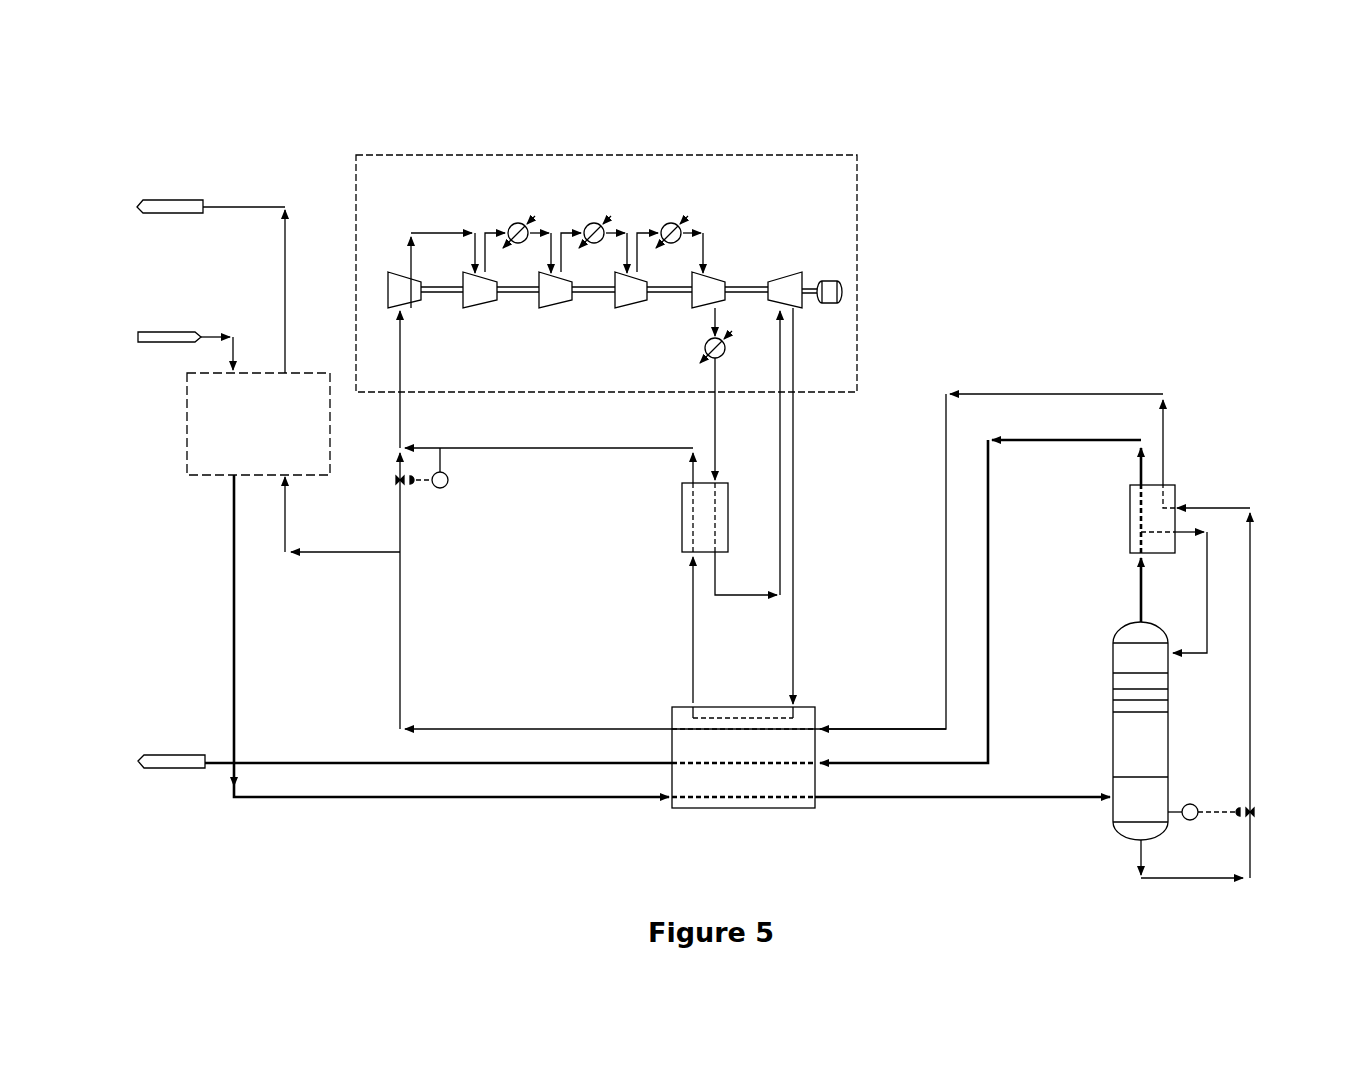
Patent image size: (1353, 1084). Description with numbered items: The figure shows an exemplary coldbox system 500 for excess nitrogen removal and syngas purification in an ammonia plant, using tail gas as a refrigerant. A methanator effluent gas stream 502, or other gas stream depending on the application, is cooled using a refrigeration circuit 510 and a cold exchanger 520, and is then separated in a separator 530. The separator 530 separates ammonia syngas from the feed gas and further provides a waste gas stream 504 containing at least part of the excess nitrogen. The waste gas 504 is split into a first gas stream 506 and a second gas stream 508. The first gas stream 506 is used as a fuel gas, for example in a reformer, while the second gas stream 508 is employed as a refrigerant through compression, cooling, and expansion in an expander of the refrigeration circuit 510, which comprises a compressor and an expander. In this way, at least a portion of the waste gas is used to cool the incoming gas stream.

The coldbox system 500 is at (933, 164).
The methanator effluent gas stream 502 is at (160, 344).
The waste gas stream 504 is at (402, 650).
The first gas stream 506 is at (349, 552).
The second gas stream 508 is at (402, 527).
The refrigeration circuit 510 is at (857, 325).
The cold exchanger 520 is at (780, 805).
The separator 530 is at (1170, 740).